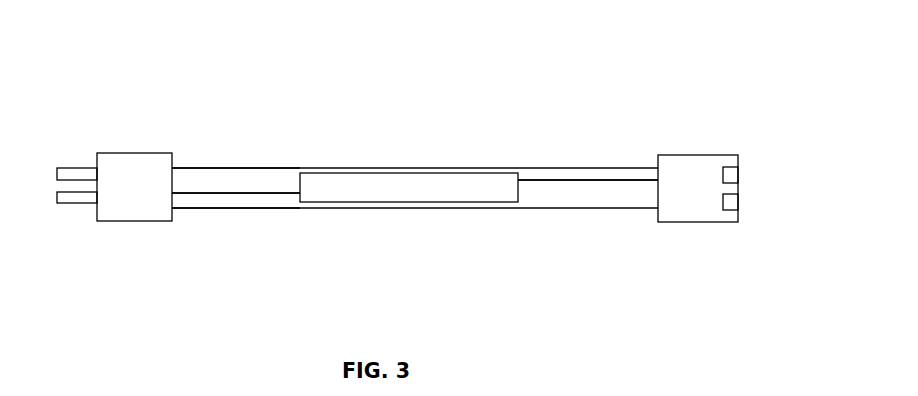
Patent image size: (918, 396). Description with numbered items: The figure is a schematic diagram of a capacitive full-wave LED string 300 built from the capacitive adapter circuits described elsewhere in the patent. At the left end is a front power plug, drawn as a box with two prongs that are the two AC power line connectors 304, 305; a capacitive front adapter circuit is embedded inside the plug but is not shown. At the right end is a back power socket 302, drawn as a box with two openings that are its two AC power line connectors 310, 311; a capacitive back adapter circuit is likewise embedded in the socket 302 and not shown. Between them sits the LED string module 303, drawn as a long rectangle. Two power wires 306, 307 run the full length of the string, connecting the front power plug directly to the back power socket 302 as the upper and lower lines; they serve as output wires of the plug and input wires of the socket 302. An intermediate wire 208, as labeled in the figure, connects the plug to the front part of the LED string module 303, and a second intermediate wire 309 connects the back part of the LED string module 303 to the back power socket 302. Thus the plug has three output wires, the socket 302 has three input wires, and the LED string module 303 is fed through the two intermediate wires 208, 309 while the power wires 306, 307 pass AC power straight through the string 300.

The capacitive full-wave LED string 300 is at (422, 183).
The back power socket 302 is at (703, 152).
The LED string module 303 is at (413, 167).
The AC power line connector 304 is at (78, 152).
The AC power line connector 305 is at (65, 217).
The power wire 306 is at (232, 165).
The power wire 307 is at (230, 217).
The intermediate wire 208 is at (287, 188).
The intermediate wire 309 is at (574, 171).
The AC power line connector 310 is at (750, 167).
The AC power line connector 311 is at (748, 218).